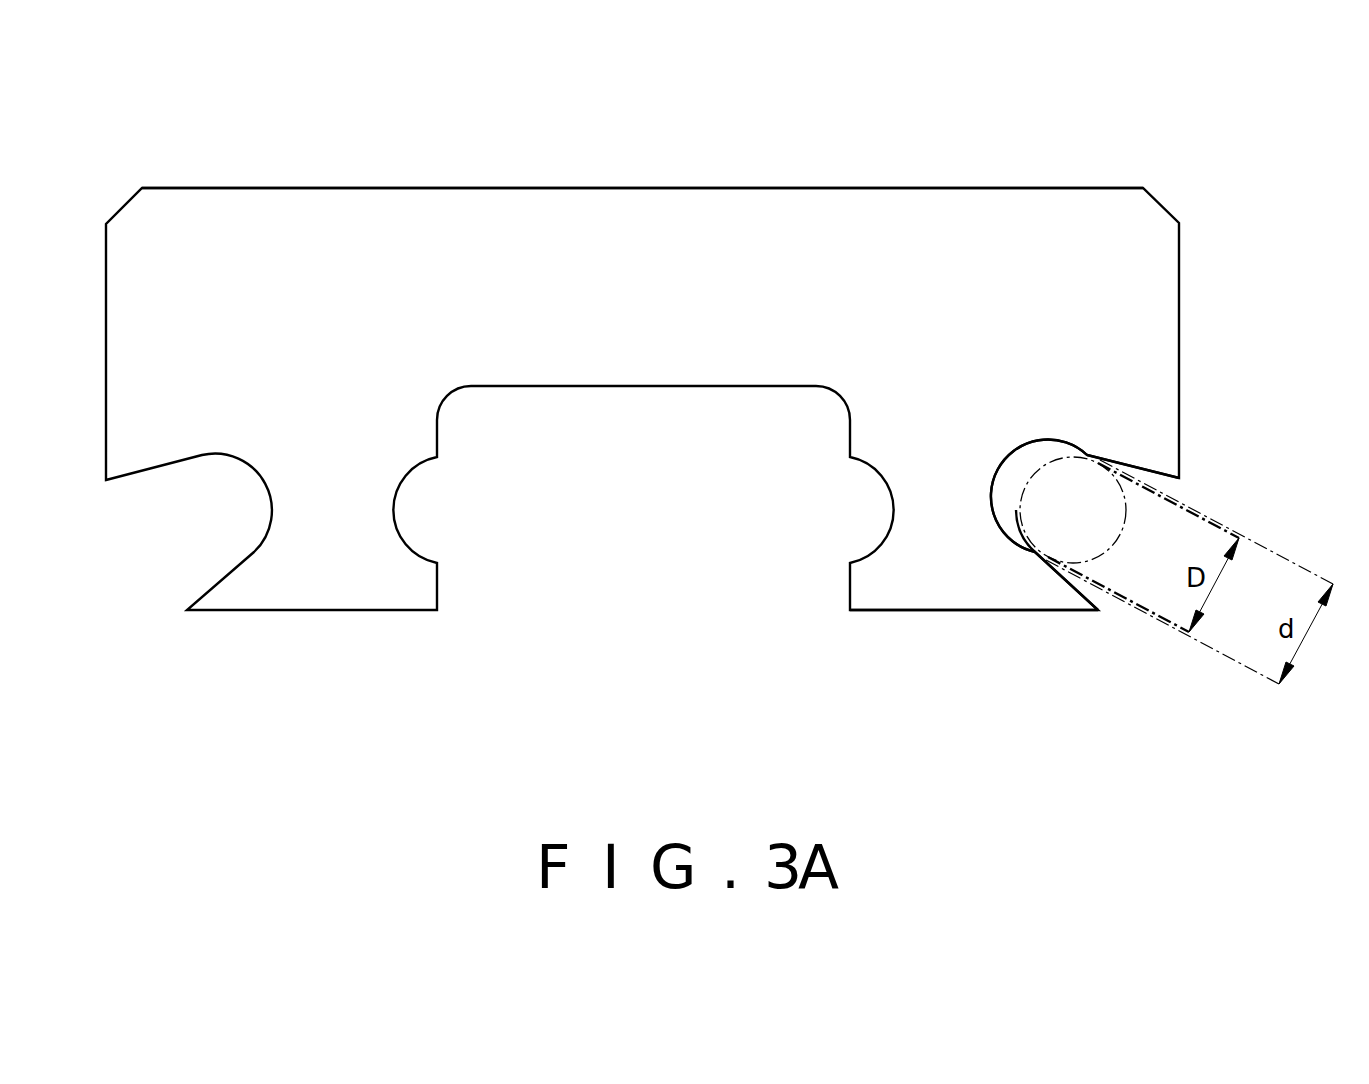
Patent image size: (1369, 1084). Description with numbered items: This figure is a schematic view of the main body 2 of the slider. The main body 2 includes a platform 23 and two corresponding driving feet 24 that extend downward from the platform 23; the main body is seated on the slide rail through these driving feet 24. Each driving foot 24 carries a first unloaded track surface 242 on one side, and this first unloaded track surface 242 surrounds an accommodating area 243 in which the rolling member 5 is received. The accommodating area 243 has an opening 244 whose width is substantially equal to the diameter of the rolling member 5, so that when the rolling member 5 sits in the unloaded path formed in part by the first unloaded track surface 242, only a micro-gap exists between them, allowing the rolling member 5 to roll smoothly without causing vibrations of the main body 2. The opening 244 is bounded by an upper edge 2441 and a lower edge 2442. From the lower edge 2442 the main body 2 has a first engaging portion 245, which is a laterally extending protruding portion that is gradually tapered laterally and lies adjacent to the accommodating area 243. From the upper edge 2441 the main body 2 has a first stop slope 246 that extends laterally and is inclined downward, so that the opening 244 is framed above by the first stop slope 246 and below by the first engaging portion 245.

The main body 2 is at (92, 165).
The platform 23 is at (603, 240).
The driving foot 24 is at (900, 595).
The accommodating area 243 is at (1067, 470).
The first unloaded track surface 242 is at (1013, 505).
The rolling member 5 is at (1044, 558).
The upper edge 2441 is at (1098, 468).
The lower edge 2442 is at (1051, 552).
The first stop slope 246 is at (1180, 482).
The first engaging portion 245 is at (1088, 603).
The opening 244 is at (1080, 510).